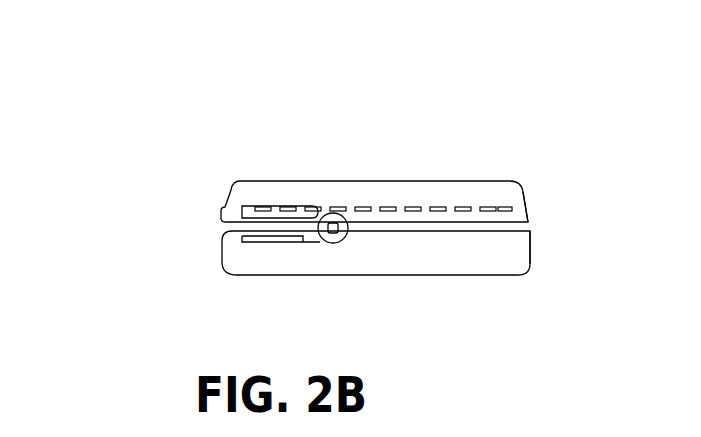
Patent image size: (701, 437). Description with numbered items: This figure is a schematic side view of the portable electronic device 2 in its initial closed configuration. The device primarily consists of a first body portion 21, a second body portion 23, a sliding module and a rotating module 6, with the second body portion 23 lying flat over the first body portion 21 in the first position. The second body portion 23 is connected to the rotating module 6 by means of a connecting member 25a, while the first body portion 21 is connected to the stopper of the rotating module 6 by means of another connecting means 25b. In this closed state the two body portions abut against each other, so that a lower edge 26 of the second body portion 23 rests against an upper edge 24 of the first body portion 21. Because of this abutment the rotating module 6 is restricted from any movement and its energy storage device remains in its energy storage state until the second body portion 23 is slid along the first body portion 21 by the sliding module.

The portable electronic device 2 is at (280, 97).
The rotating module 6 is at (334, 222).
The first body portion 21 is at (302, 275).
The second body portion 23 is at (256, 181).
The upper edge 24 is at (529, 231).
The connecting member 25a is at (242, 213).
The connecting means 25b is at (242, 241).
The lower edge 26 is at (527, 223).